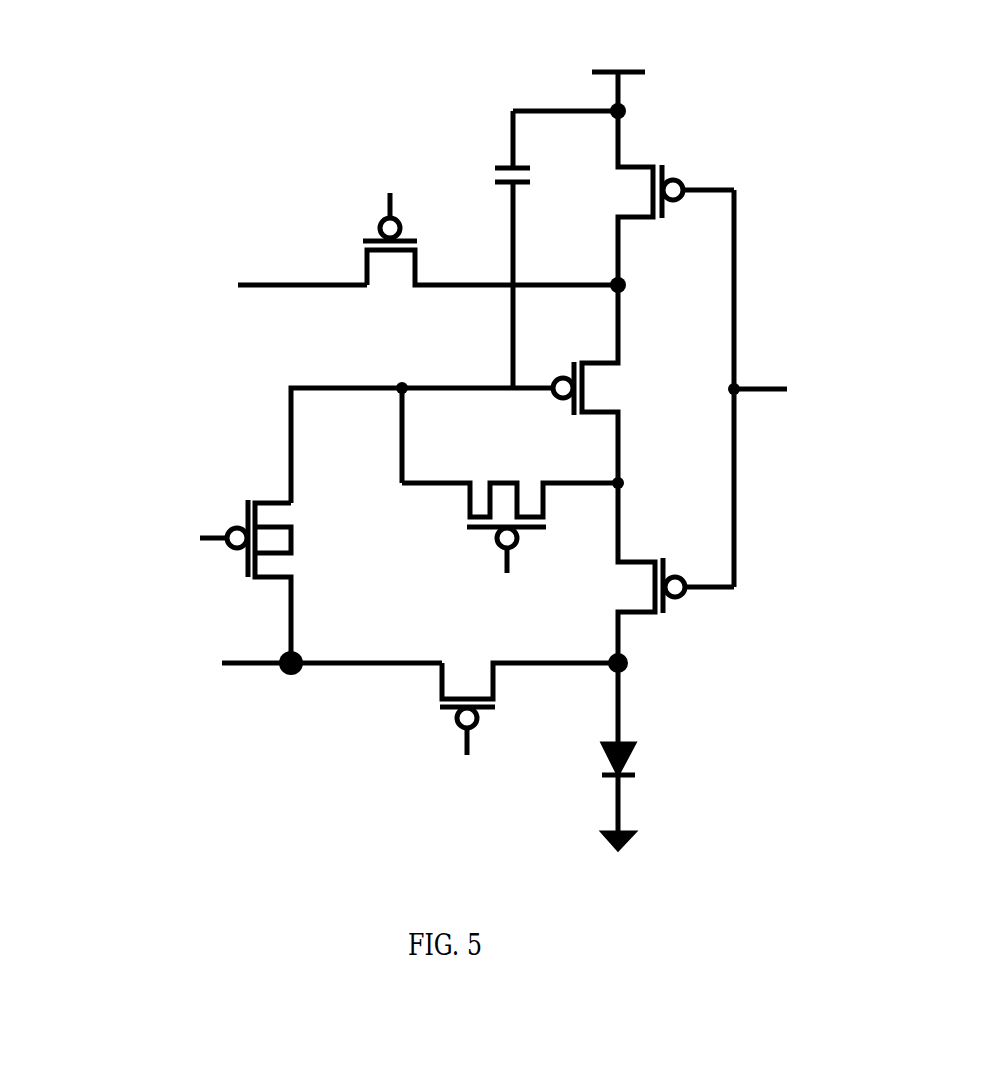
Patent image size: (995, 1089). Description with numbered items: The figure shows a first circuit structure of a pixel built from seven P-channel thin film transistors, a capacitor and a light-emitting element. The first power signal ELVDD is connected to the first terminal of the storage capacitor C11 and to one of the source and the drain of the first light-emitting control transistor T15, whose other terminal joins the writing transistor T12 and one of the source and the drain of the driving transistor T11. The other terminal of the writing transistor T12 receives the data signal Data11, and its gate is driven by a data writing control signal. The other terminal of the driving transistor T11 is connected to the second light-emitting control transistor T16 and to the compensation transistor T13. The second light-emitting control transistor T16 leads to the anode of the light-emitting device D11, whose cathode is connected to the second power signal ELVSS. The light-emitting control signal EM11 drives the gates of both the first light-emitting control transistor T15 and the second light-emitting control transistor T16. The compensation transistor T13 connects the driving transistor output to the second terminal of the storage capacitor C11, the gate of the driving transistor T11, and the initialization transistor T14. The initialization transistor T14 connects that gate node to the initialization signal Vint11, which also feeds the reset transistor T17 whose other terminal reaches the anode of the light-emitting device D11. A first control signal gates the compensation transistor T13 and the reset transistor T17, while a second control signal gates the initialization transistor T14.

The driving transistor T11 is at (461, 394).
The writing transistor T12 is at (473, 242).
The compensation transistor T13 is at (510, 529).
The initialization transistor T14 is at (194, 581).
The first light-emitting control transistor T15 is at (666, 198).
The second light-emitting control transistor T16 is at (667, 573).
The reset transistor T17 is at (515, 708).
The storage capacitor C11 is at (527, 249).
The light-emitting device D11 is at (641, 747).
The first power signal ELVDD is at (584, 82).
The second power signal ELVSS is at (617, 857).
The light-emitting control signal EM11 is at (788, 388).
The data signal Data11 is at (389, 283).
The initialization signal Vint11 is at (290, 663).